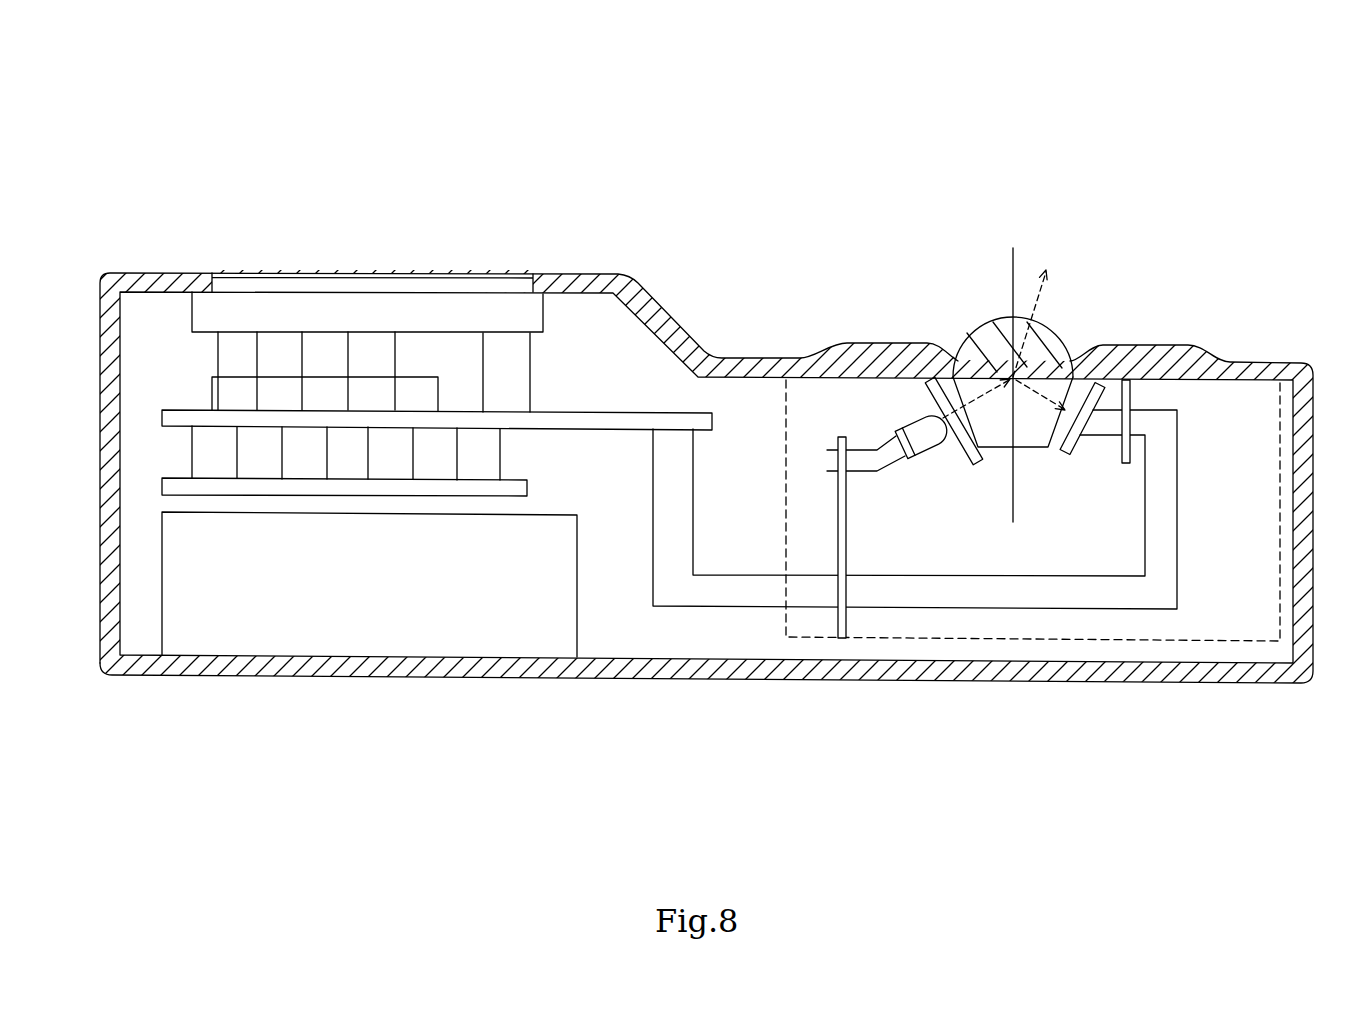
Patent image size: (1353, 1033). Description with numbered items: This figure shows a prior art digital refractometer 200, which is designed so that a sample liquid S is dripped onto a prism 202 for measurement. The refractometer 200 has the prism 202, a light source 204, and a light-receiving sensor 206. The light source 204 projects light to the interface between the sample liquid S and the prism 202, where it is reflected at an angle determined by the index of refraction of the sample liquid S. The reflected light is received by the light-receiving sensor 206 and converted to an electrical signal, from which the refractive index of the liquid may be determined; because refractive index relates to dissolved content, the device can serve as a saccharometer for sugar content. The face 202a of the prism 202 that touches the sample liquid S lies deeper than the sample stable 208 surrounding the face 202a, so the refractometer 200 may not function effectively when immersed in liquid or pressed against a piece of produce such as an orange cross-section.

The digital refractometer 200 is at (1042, 161).
The prism 202 is at (1000, 402).
The face of the prism 202a is at (1013, 377).
The light source 204 is at (910, 412).
The light-receiving sensor 206 is at (1088, 386).
The sample stable 208 is at (934, 378).
The sample liquid S is at (983, 321).